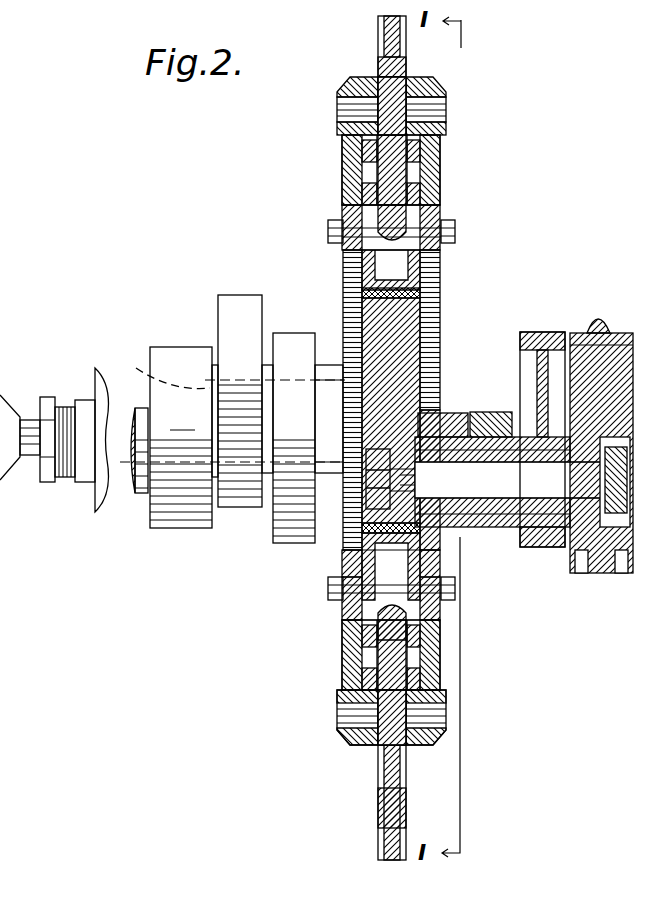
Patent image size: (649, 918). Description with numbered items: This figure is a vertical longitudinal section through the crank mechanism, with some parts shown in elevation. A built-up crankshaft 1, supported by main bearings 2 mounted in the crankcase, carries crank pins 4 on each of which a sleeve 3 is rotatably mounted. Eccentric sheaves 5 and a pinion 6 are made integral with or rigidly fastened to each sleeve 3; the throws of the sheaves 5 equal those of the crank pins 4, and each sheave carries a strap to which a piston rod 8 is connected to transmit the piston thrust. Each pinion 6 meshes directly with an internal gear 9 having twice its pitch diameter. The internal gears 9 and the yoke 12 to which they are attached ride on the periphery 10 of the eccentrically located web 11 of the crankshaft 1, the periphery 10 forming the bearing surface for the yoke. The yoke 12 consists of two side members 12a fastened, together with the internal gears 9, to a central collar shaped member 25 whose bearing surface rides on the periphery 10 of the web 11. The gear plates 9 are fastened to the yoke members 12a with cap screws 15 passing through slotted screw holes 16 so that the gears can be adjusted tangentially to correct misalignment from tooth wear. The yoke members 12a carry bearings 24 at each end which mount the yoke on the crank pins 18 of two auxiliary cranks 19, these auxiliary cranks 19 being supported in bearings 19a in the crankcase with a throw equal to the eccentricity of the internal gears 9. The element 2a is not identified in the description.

The crankshaft 1 is at (143, 480).
The main bearings 2 is at (195, 341).
The gear 2a is at (4, 258).
The sleeve 3 is at (328, 372).
The crank pins 4 is at (483, 413).
The eccentric sheaves 5 is at (254, 302).
The pinion 6 is at (440, 405).
The piston rod 8 is at (31, 428).
The internal gear 9 is at (442, 257).
The periphery 10 is at (414, 292).
The web 11 is at (398, 340).
The yoke 12 is at (328, 226).
The yoke members 12a is at (440, 152).
The cap screws 15 is at (452, 232).
The screw holes 16 is at (440, 205).
The crank pins 18 is at (425, 105).
The auxiliary cranks 19 is at (402, 170).
The bearings 19a is at (410, 62).
The bearings 24 is at (346, 150).
The central collar shaped member 25 is at (382, 259).